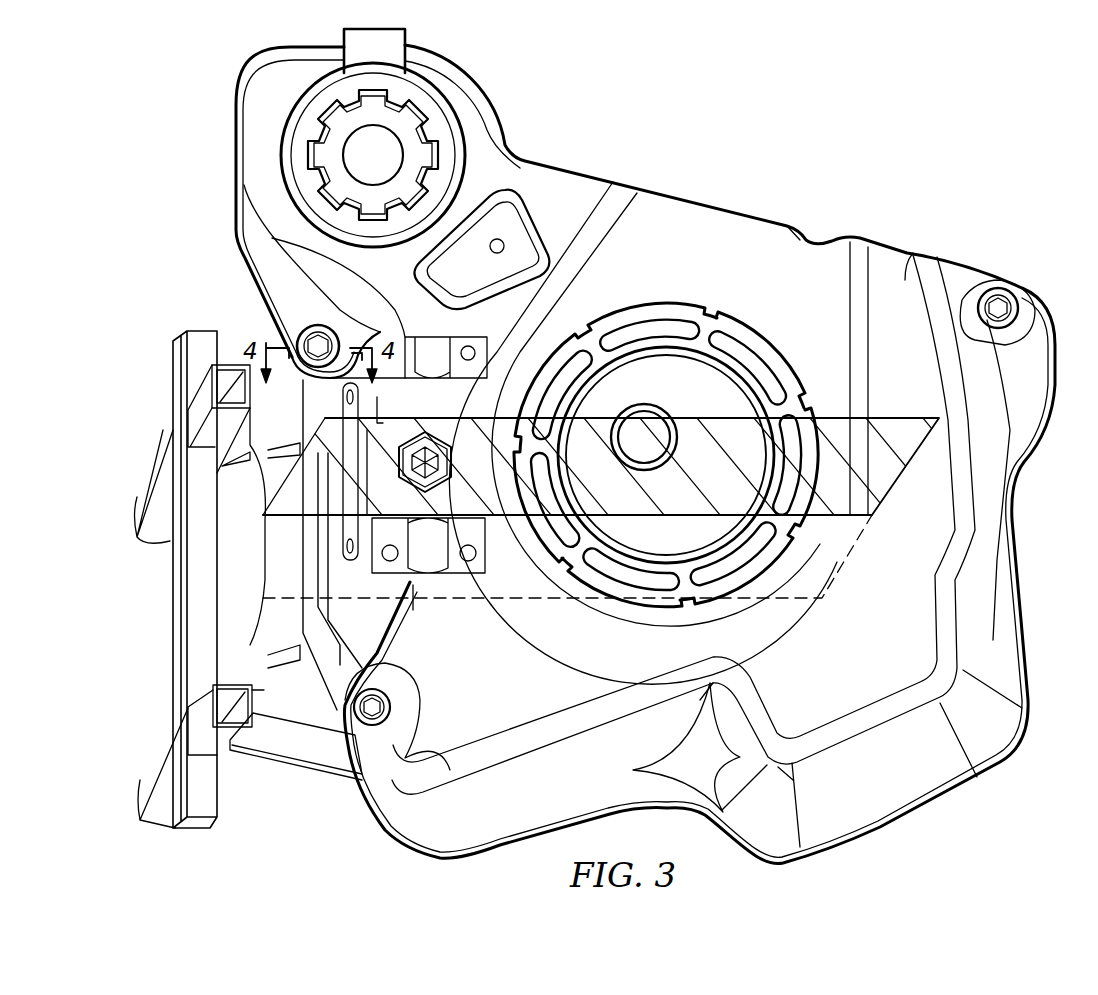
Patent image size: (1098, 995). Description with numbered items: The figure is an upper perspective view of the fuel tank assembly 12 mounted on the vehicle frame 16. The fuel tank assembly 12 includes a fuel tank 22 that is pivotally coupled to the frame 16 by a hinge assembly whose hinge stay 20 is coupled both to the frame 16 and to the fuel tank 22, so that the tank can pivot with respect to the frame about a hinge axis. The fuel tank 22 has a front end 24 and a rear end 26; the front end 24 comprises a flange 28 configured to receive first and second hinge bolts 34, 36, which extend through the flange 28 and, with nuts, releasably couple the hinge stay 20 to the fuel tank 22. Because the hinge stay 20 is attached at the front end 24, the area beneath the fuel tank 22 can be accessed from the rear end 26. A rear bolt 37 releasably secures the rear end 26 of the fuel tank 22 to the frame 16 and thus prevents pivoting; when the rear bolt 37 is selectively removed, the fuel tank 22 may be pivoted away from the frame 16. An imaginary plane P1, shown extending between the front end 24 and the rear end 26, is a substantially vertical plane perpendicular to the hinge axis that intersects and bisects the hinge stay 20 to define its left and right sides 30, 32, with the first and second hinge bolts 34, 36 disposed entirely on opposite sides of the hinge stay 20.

The fuel tank assembly 12 is at (318, 335).
The frame 16 is at (278, 470).
The hinge stay 20 is at (295, 408).
The fuel tank 22 is at (680, 295).
The front end 24 is at (197, 300).
The rear end 26 is at (988, 517).
The flange 28 is at (362, 745).
The left side 30 is at (300, 611).
The right side 32 is at (300, 431).
The first hinge bolt 34 is at (290, 330).
The second hinge bolt 36 is at (360, 707).
The rear bolt 37 is at (1000, 298).
The imaginary plane P1 is at (888, 417).